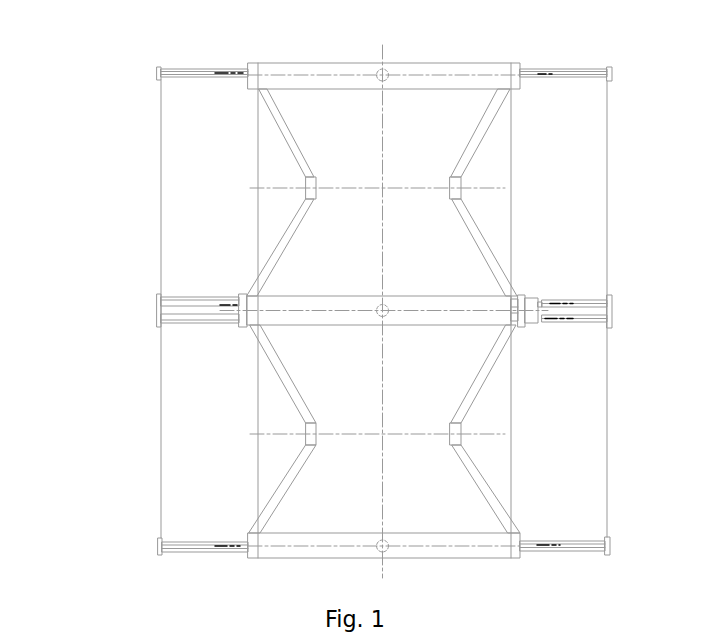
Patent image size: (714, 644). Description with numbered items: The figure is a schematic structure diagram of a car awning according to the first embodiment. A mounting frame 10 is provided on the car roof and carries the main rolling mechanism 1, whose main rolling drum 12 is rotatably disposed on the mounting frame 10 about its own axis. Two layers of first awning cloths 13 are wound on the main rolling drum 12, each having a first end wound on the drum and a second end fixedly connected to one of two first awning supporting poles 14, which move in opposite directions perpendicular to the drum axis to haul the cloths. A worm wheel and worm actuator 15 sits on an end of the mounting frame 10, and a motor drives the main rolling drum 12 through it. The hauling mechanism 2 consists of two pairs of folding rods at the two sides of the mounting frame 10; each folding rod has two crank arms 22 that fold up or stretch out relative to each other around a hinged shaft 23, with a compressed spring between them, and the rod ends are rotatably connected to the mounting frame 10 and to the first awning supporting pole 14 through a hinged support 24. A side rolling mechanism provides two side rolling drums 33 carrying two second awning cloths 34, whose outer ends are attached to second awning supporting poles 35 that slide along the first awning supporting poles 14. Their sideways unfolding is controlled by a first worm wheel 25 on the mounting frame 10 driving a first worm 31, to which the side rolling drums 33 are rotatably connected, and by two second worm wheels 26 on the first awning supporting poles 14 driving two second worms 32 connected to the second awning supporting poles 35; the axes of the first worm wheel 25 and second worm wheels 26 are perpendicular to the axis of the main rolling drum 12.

The main rolling mechanism 1 is at (228, 268).
The hauling mechanism 2 is at (487, 438).
The mounting frame 10 is at (527, 312).
The main rolling drum 12 is at (478, 302).
The first awning cloth 13 is at (447, 115).
The first awning supporting pole 14 is at (303, 68).
The worm wheel and worm actuator 15 is at (535, 320).
The crank arm 22 is at (482, 230).
The hinged shaft 23 is at (462, 188).
The hinged support 24 is at (512, 322).
The first worm wheel 25 is at (378, 307).
The second worm wheel 26 is at (386, 72).
The first worm 31 is at (160, 322).
The second worm 32 is at (158, 82).
The side rolling drum 33 is at (180, 320).
The second awning cloth 34 is at (537, 115).
The second awning supporting pole 35 is at (202, 72).